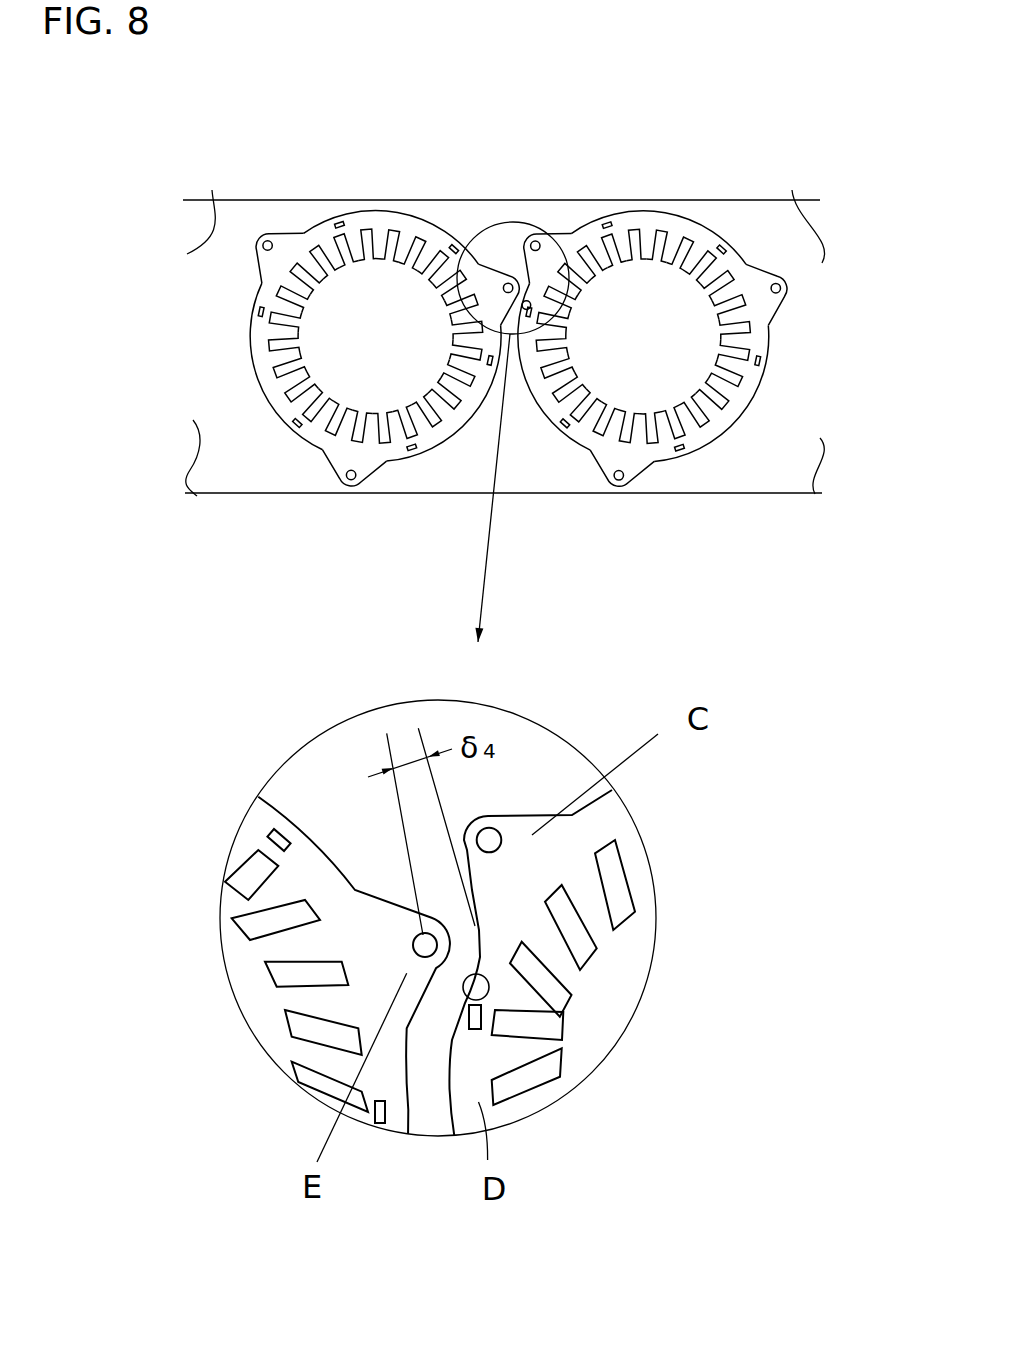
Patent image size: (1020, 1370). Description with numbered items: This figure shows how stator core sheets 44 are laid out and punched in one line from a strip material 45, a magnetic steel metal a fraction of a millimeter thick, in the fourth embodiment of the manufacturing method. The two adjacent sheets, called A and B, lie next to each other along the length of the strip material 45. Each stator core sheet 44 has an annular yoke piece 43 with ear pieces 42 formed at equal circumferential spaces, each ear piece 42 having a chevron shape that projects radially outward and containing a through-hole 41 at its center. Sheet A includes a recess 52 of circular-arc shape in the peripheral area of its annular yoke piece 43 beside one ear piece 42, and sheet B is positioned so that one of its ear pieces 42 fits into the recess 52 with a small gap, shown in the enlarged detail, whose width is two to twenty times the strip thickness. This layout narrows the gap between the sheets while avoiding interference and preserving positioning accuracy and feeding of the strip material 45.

The through-hole 41 is at (270, 240).
The ear piece 42 is at (288, 244).
The annular yoke piece 43 is at (397, 222).
The stator core sheet 44 is at (476, 614).
The strip material 45 is at (222, 228).
The recess 52 is at (484, 982).